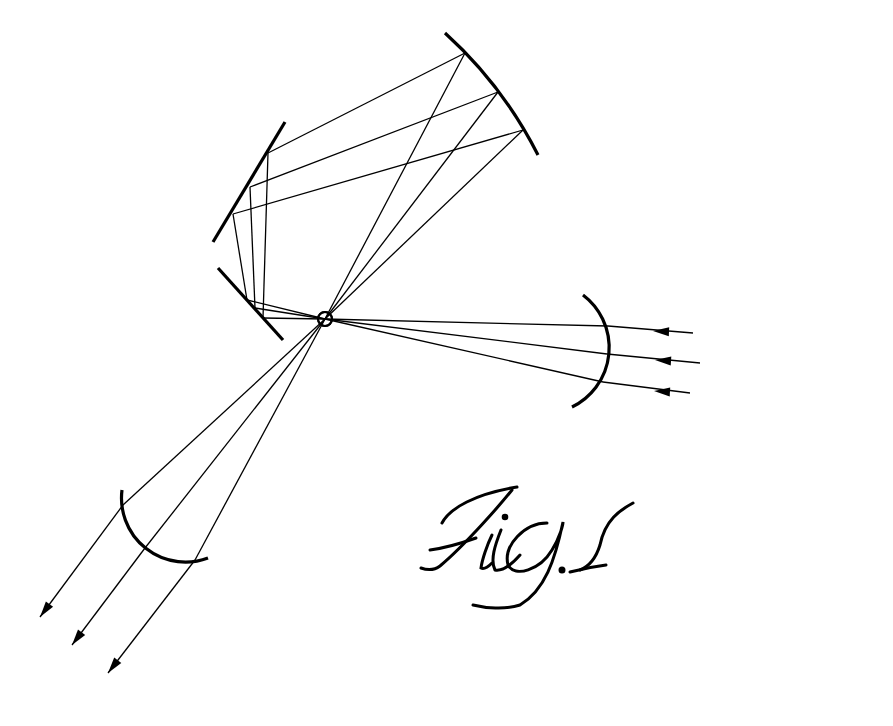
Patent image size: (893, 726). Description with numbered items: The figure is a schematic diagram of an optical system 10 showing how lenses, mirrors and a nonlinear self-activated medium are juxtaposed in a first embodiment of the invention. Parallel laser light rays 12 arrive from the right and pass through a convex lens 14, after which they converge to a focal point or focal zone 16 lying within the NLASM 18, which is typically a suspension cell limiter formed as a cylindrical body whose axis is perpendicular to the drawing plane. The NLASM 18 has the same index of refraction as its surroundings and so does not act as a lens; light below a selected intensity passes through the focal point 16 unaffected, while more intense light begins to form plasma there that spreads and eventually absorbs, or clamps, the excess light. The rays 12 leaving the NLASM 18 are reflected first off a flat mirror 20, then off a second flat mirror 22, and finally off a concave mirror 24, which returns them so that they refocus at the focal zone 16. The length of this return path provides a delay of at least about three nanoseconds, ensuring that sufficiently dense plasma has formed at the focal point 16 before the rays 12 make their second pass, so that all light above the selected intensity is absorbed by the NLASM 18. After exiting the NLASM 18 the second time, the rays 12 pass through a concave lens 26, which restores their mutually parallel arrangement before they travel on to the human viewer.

The optical system 10 is at (233, 148).
The laser light rays 12 is at (693, 334).
The convex lens 14 is at (590, 393).
The focal point or focal zone 16 is at (324, 312).
The NLASM 18 is at (323, 327).
The flat mirror 20 is at (231, 285).
The flat mirror 22 is at (228, 221).
The concave mirror 24 is at (480, 60).
The concave lens 26 is at (173, 563).